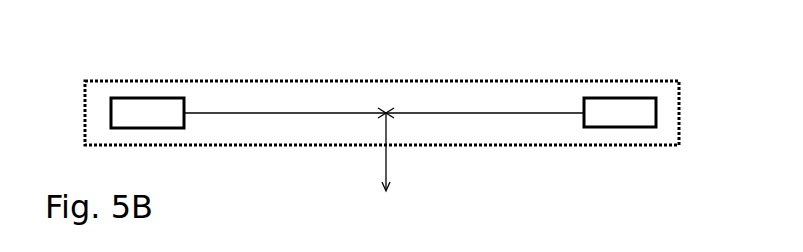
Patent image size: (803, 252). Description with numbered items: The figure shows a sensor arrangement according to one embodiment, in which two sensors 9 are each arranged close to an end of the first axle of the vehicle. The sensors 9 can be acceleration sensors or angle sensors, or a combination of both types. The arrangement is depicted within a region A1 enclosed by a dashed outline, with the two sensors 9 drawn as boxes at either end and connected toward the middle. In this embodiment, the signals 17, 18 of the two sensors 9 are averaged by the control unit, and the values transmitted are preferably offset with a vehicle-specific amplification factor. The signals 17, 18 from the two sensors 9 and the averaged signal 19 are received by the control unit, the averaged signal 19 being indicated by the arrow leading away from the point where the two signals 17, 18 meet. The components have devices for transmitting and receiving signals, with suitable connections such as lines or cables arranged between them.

The cabin region A1 is at (624, 81).
The sensor 9 is at (111, 112).
The signal 17 is at (270, 112).
The signal 18 is at (495, 112).
The averaged signal 19 is at (382, 158).